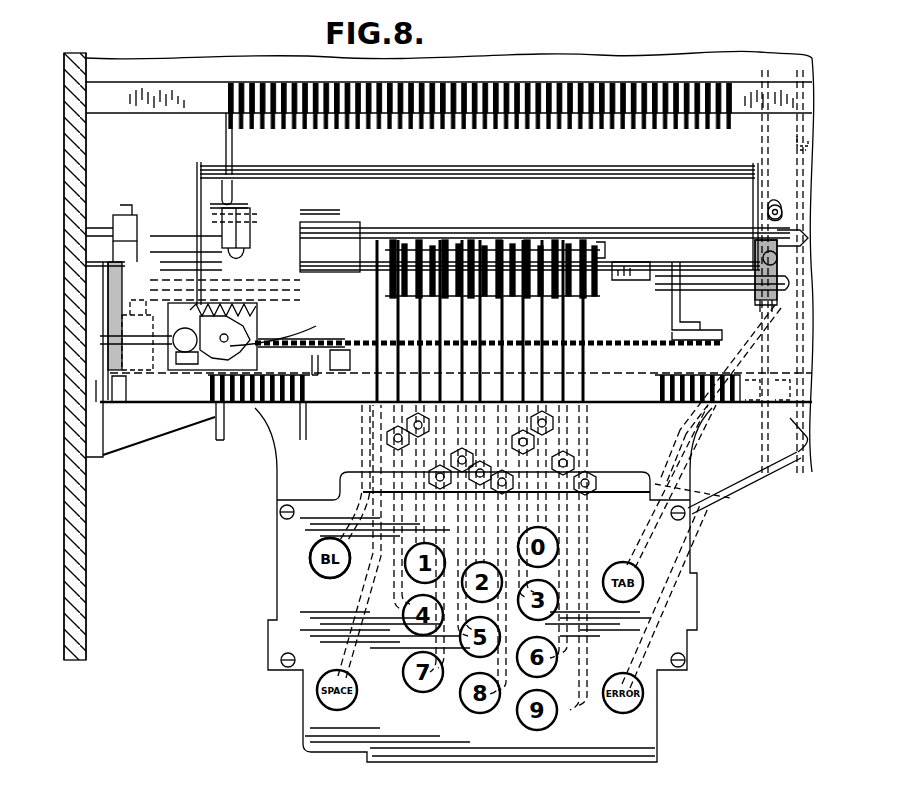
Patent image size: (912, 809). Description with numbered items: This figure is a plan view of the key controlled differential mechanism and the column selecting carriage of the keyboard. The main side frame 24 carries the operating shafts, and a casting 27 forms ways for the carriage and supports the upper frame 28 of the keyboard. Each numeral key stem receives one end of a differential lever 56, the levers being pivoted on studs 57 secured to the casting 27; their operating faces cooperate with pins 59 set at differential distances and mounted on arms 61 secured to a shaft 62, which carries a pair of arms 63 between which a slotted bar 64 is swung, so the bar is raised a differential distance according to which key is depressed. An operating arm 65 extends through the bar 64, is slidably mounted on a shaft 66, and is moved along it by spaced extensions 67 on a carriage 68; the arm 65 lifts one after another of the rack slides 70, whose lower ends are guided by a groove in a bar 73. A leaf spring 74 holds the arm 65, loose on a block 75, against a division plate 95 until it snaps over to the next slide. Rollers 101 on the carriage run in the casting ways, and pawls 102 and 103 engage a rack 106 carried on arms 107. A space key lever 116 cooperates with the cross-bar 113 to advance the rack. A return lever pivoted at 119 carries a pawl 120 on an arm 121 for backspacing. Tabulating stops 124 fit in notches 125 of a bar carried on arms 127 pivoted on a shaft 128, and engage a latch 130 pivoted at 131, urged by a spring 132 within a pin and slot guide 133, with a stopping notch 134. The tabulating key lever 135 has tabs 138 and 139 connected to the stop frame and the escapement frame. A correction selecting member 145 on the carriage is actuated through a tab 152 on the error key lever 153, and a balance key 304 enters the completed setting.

The main side frame 24 is at (86, 576).
The casting 27 is at (283, 484).
The upper frame of the keyboard 28 is at (366, 728).
The differential lever 56 is at (420, 326).
The stud 57 is at (590, 480).
The pin 59 is at (418, 236).
The arm 61 is at (598, 240).
The shaft 62 is at (728, 280).
The arm 63 is at (197, 188).
The slotted bar 64 is at (452, 176).
The operating arm 65 is at (233, 164).
The shaft 66 is at (344, 232).
The extension 67 is at (244, 216).
The carriage 68 is at (160, 232).
The rack slide 70 is at (355, 120).
The bar 73 is at (148, 102).
The leaf spring 74 is at (224, 196).
The block 75 is at (236, 204).
The division plate 95 is at (402, 122).
The roller 101 is at (342, 212).
The pawl 102 is at (306, 343).
The pawl 103 is at (336, 362).
The rack 106 is at (660, 346).
The arm 107 is at (682, 314).
The cross-bar 113 is at (676, 240).
The space key lever 116 is at (348, 606).
The pivot 119 is at (150, 430).
The pawl 120 is at (152, 370).
The arm 121 is at (118, 404).
The tabulating stop 124 is at (272, 430).
The notch 125 is at (312, 404).
The arm 127 is at (216, 444).
The shaft 128 is at (616, 404).
The latch 130 is at (250, 314).
The pivot 131 is at (189, 364).
The spring 132 is at (232, 318).
The pin and slot guide 133 is at (306, 326).
The stopping notch 134 is at (240, 404).
The key lever 135 is at (732, 500).
The tab 138 is at (778, 204).
The tab 139 is at (810, 236).
The correction selecting member 145 is at (250, 236).
The tab 152 is at (806, 148).
The error key lever 153 is at (710, 500).
The balance key 304 is at (320, 554).